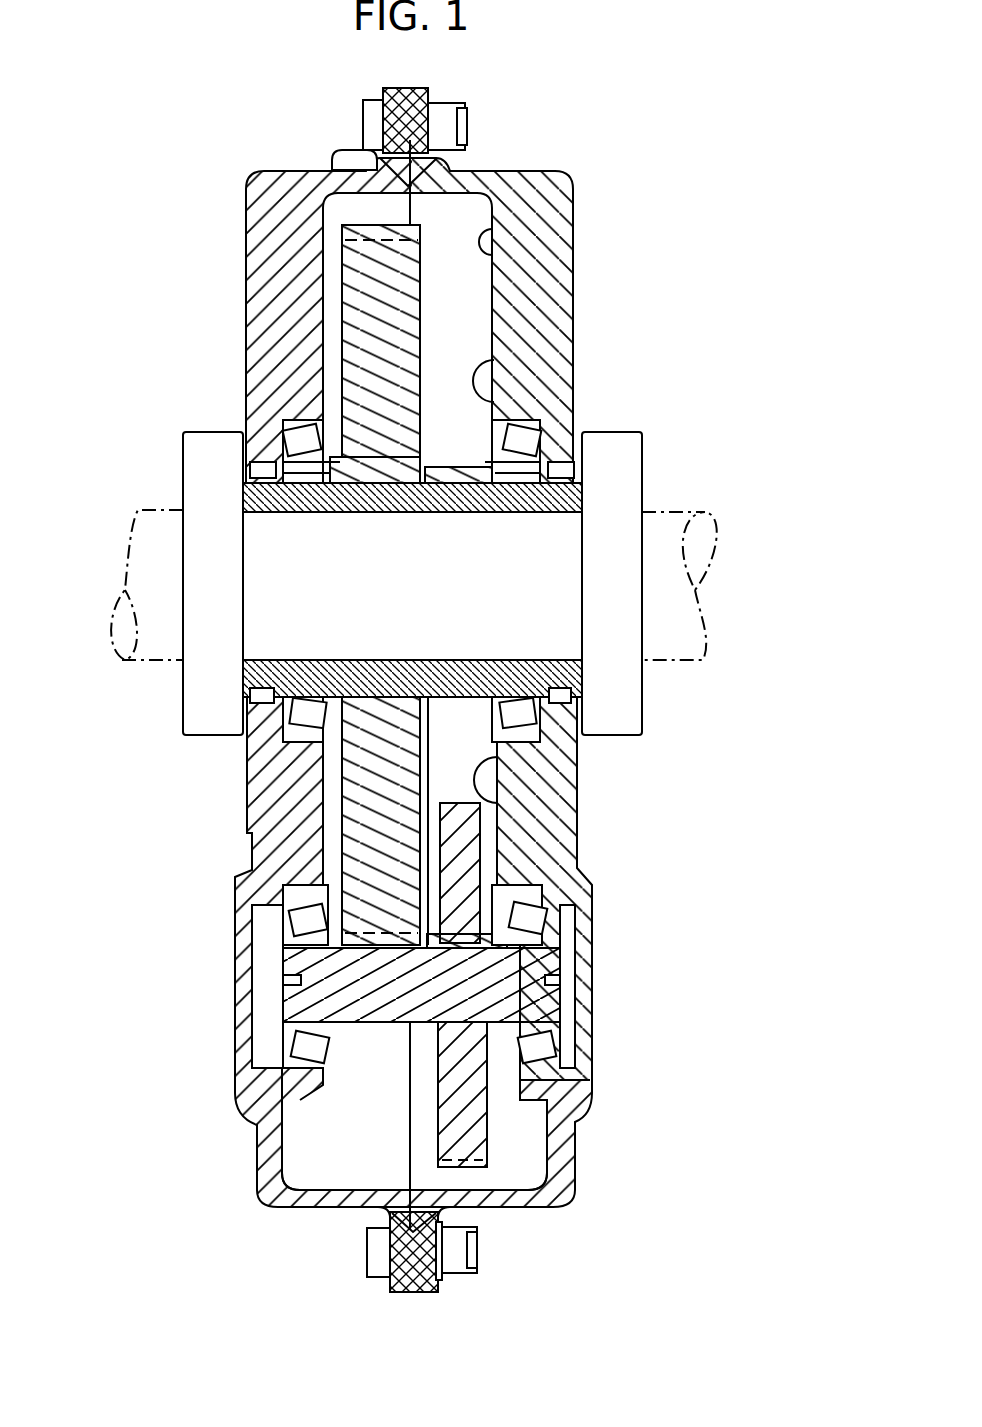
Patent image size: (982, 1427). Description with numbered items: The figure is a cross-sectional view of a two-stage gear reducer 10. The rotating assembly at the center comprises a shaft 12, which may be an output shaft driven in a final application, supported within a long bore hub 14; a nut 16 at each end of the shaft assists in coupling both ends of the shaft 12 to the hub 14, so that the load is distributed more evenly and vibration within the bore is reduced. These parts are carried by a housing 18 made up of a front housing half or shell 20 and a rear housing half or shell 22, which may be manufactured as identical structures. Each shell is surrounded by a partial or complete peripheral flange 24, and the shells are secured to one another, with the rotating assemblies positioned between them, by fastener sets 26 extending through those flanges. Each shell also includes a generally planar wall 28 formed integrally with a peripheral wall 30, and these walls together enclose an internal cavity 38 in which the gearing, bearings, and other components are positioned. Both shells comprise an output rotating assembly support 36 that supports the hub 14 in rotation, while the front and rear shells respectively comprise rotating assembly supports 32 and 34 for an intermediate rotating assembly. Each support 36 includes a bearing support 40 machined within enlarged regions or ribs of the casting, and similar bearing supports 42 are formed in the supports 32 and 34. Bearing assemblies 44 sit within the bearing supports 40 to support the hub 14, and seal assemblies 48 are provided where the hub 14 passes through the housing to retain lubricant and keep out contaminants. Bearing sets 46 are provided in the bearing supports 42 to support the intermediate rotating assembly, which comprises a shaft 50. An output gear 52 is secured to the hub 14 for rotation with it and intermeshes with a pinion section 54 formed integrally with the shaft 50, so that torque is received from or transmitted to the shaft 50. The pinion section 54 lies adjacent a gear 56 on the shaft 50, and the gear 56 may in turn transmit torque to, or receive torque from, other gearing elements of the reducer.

The gear reducer 10 is at (240, 1153).
The shaft 12 is at (138, 512).
The hub 14 is at (535, 447).
The nut 16 is at (190, 681).
The housing 18 is at (262, 192).
The front housing half or shell 20 is at (305, 1207).
The rear housing half or shell 22 is at (492, 1207).
The peripheral flange 24 is at (400, 90).
The fastener sets 26 is at (465, 117).
The planar wall 28 is at (268, 1167).
The peripheral wall 30 is at (373, 1208).
The rotating assembly support 32 is at (243, 901).
The rotating assembly support 34 is at (592, 889).
The output rotating assembly support 36 is at (263, 742).
The internal cavity 38 is at (300, 1142).
The bearing support 40 is at (290, 425).
The bearing supports 42 is at (268, 880).
The bearing assemblies 44 is at (287, 433).
The bearing sets 46 is at (287, 938).
The seal assemblies 48 is at (577, 462).
The shaft 50 is at (287, 1010).
The output gear 52 is at (420, 291).
The pinion section 54 is at (380, 1018).
The gear 56 is at (478, 1112).